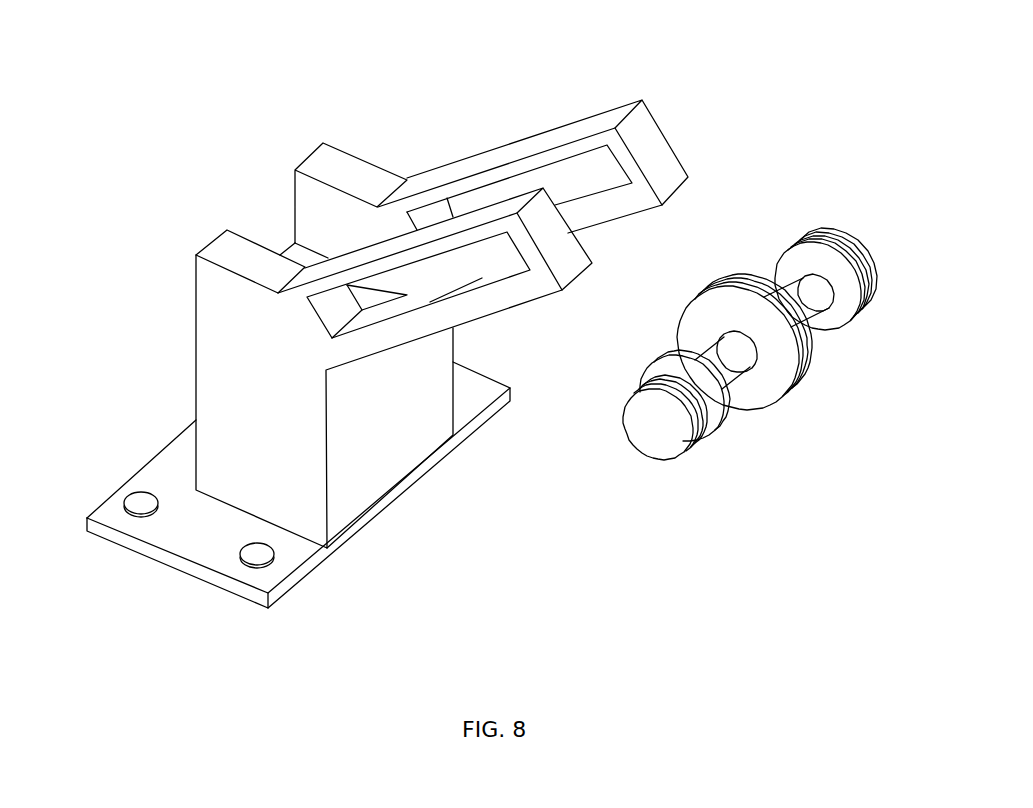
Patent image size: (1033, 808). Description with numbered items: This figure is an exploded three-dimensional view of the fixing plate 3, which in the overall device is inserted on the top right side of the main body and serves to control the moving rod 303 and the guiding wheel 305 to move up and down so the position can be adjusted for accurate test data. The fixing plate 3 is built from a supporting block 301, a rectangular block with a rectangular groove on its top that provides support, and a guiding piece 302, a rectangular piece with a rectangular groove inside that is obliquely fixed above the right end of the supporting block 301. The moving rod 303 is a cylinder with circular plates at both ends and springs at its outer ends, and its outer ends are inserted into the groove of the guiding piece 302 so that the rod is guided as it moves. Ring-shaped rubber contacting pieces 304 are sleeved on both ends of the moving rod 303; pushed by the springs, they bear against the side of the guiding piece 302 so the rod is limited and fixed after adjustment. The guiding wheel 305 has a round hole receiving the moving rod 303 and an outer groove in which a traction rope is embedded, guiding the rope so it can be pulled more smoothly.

The fixing plate 3 is at (180, 485).
The supporting block 301 is at (285, 397).
The guiding piece 302 is at (488, 155).
The moving rod 303 is at (730, 366).
The contacting piece 304 is at (715, 422).
The guiding wheel 305 is at (778, 363).